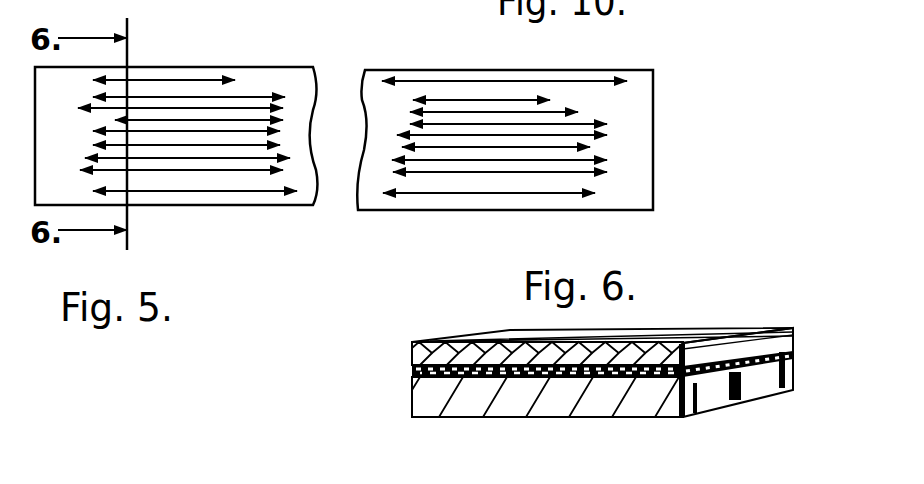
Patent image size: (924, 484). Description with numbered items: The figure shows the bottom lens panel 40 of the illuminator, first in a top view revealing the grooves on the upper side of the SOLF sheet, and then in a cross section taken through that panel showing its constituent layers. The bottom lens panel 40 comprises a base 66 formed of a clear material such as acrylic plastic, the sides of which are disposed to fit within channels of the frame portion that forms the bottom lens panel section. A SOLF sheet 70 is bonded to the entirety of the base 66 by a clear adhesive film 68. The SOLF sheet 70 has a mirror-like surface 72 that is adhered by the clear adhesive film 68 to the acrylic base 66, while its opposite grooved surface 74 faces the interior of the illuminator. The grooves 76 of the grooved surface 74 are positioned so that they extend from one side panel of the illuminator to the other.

In FIG. 5, the bottom lens panel 40 is at (180, 65).
In FIG. 6, the bottom lens panel 40 is at (750, 401).
In FIG. 6, the base 66 is at (408, 392).
In FIG. 6, the clear adhesive film 68 is at (410, 370).
In FIG. 5, the SOLF sheet 70 is at (427, 68).
In FIG. 6, the SOLF sheet 70 is at (769, 326).
In FIG. 6, the mirror-like surface 72 is at (647, 373).
In FIG. 5, the grooved surface 74 is at (638, 105).
In FIG. 6, the grooved surface 74 is at (508, 323).
In FIG. 5, the grooves 76 is at (253, 145).
In FIG. 6, the grooves 76 is at (467, 343).